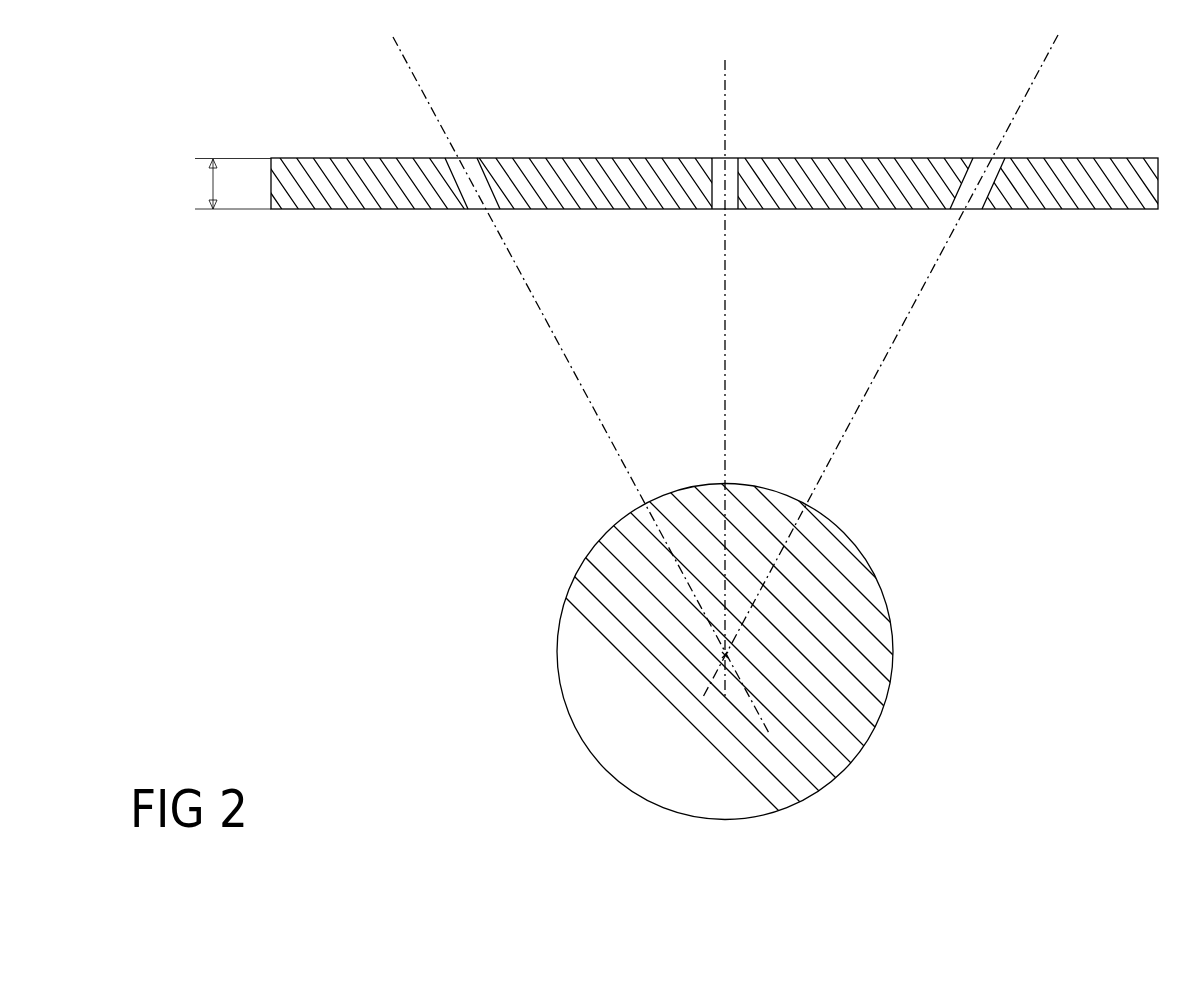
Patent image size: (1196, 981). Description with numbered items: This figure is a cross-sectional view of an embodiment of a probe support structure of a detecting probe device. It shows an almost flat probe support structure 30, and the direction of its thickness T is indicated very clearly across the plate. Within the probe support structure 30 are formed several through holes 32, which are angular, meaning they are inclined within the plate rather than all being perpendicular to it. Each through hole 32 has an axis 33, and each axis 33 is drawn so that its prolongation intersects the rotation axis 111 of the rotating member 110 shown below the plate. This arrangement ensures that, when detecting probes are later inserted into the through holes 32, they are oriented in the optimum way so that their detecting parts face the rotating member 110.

The probe support structure 30 is at (1100, 203).
The through holes 32 is at (485, 191).
The axis 33 is at (450, 137).
The rotating member 110 is at (860, 733).
The rotation axis 111 is at (727, 655).
The thickness T is at (223, 184).